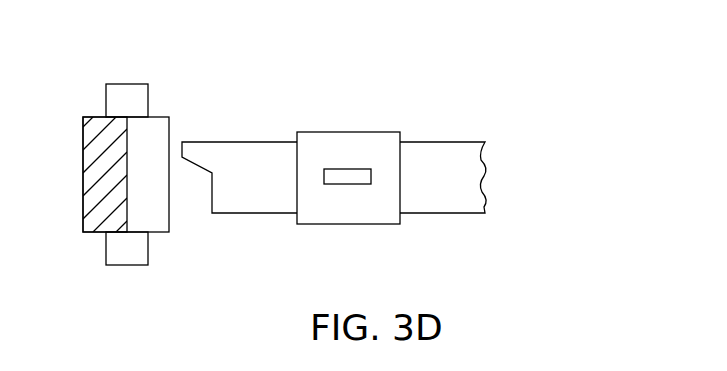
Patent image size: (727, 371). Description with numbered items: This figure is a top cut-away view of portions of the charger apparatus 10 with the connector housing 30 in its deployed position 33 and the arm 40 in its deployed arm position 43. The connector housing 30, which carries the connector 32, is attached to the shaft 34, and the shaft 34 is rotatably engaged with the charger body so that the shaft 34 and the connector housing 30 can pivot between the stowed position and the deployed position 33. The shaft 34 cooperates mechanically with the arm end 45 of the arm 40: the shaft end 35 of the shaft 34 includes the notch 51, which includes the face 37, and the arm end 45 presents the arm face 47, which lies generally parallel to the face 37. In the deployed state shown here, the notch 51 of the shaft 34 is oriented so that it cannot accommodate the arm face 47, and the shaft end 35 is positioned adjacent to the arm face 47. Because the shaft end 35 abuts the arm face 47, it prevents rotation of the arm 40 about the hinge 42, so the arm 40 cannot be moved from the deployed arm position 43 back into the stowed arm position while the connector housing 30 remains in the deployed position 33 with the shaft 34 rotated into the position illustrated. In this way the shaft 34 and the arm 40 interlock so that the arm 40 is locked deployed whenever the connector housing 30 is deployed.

The assembly 10 is at (446, 37).
The connector housing 30 is at (377, 218).
The connector 32 is at (346, 174).
The deployed position 33 is at (397, 218).
The shaft 34 is at (237, 153).
The shaft end 35 is at (202, 183).
The face 37 is at (193, 163).
The arm 40 is at (93, 148).
The hinge 42 is at (133, 266).
The deployed arm position 43 is at (100, 205).
The arm end 45 is at (157, 127).
The arm face 47 is at (169, 222).
The notch 51 is at (182, 158).